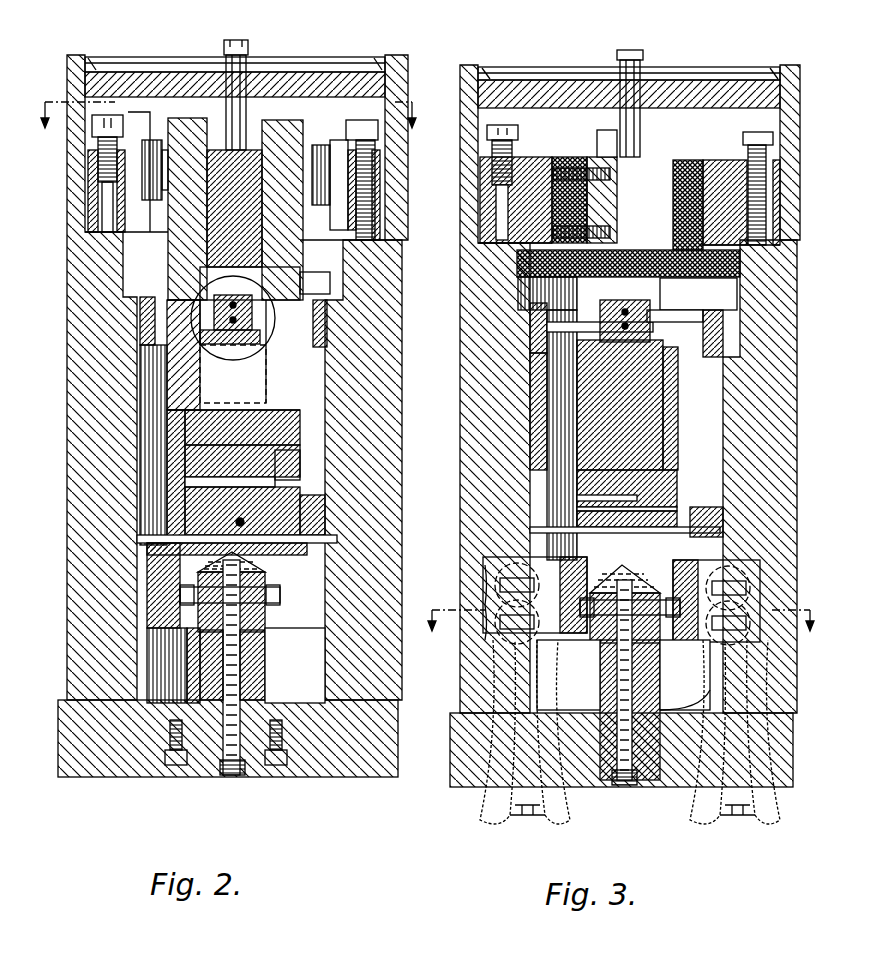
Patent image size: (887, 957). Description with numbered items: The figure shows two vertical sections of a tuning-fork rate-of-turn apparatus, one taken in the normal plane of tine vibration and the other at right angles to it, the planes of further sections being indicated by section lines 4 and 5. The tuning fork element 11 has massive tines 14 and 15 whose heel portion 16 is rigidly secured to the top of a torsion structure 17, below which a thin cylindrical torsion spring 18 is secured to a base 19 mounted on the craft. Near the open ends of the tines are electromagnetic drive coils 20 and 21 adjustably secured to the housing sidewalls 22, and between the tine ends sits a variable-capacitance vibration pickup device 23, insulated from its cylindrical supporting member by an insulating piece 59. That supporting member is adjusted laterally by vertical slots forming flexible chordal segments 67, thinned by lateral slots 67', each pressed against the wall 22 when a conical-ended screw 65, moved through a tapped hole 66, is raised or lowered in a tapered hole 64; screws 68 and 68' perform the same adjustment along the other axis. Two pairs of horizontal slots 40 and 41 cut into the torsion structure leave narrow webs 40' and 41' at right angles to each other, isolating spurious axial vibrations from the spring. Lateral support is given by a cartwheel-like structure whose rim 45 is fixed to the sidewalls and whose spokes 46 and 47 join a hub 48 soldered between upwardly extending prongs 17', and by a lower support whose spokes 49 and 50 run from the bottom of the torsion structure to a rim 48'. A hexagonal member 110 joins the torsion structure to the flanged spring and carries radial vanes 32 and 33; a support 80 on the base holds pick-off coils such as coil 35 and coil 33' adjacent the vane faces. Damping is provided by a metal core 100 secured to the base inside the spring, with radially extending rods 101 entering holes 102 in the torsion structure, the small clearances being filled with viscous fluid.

In FIG. 2, the section line 4- 4 is at (227, 127).
In FIG. 3, the section line 5- 5 is at (620, 631).
In FIG. 2, the tuning fork element 11 is at (135, 277).
In FIG. 2, the tine 14 is at (206, 128).
In FIG. 3, the tine 14 is at (597, 137).
In FIG. 2, the tine 15 is at (280, 130).
In FIG. 3, the heel portion 16 is at (650, 425).
In FIG. 2, the torsion structure 17 is at (240, 475).
In FIG. 3, the torsion structure 17 is at (684, 408).
In FIG. 2, the prongs 17' is at (98, 421).
In FIG. 3, the prongs 17' is at (622, 408).
In FIG. 2, the cylindrical torsion spring 18 is at (275, 690).
In FIG. 3, the cylindrical torsion spring 18 is at (660, 680).
In FIG. 2, the base 19 is at (318, 777).
In FIG. 2, the electromagnetic drive coil 20 is at (153, 126).
In FIG. 2, the electromagnetic drive coil 21 is at (312, 140).
In FIG. 2, the sidewalls 22 is at (380, 280).
In FIG. 2, the vibration pickup device 23 is at (240, 278).
In FIG. 3, the vibration pickup device 23 is at (665, 157).
In FIG. 3, the pick-off armature 32 is at (740, 575).
In FIG. 3, the pick-off armature 33 is at (500, 583).
In FIG. 3, the pick-off coil 33' is at (766, 603).
In FIG. 3, the pick-off coil 35 is at (495, 585).
In FIG. 2, the slots 40 is at (171, 472).
In FIG. 3, the slots 40 is at (641, 481).
In FIG. 2, the connecting web 40' is at (165, 427).
In FIG. 2, the slots 41 is at (152, 486).
In FIG. 3, the slots 41 is at (558, 503).
In FIG. 3, the connecting web 41' is at (645, 490).
In FIG. 2, the rim 45 is at (318, 348).
In FIG. 3, the rim 45 is at (545, 327).
In FIG. 2, the spoke 46 is at (228, 350).
In FIG. 2, the spoke 47 is at (255, 282).
In FIG. 2, the hub 48 is at (317, 286).
In FIG. 2, the rim 48' is at (295, 465).
In FIG. 3, the rim 48' is at (567, 520).
In FIG. 2, the spoke 49 is at (185, 535).
In FIG. 2, the spoke 50 is at (306, 515).
In FIG. 3, the insulating piece 59 is at (712, 280).
In FIG. 2, the tapered hole 64 is at (235, 226).
In FIG. 2, the conical-ended screw 65 is at (150, 175).
In FIG. 2, the tapped hole 66 is at (100, 170).
In FIG. 2, the chordal segment 67 is at (78, 191).
In FIG. 2, the lateral slots 67' is at (64, 191).
In FIG. 3, the screw 68 is at (466, 182).
In FIG. 3, the screw 68' is at (786, 188).
In FIG. 3, the support 80 is at (540, 670).
In FIG. 2, the metal core 100 is at (208, 777).
In FIG. 3, the metal core 100 is at (598, 785).
In FIG. 2, the radially extending rods 101 is at (233, 665).
In FIG. 2, the holes 102 is at (253, 665).
In FIG. 2, the hexagonal member 110 is at (160, 580).
In FIG. 3, the hexagonal member 110 is at (685, 674).